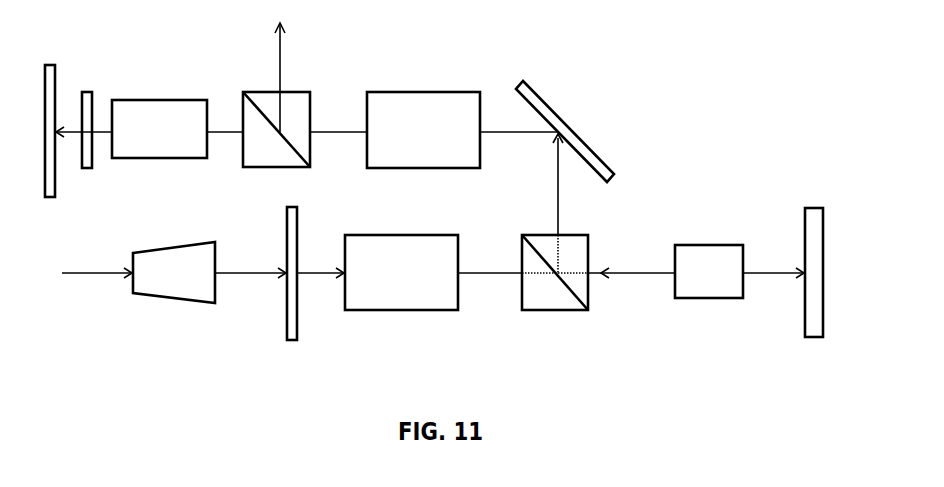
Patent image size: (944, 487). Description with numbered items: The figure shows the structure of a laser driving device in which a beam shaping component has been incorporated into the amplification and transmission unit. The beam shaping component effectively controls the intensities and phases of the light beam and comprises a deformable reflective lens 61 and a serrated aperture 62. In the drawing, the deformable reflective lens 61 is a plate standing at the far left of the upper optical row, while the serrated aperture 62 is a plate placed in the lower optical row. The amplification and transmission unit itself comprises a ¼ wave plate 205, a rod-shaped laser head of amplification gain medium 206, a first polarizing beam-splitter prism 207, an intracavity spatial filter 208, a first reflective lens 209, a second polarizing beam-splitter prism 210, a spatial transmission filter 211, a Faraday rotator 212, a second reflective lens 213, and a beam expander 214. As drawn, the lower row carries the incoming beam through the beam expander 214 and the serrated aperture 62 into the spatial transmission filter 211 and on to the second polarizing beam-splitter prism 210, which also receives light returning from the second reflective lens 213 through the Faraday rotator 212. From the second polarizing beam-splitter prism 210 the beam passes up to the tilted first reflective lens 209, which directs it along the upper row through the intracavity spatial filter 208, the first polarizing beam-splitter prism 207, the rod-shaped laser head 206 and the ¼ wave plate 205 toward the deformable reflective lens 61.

The deformable reflective lens 61 is at (50, 111).
The serrated aperture 62 is at (277, 296).
The ¼ wave plate 205 is at (84, 111).
The rod-shaped laser head of amplification gain medium 206 is at (159, 129).
The first polarizing beam-splitter prism 207 is at (285, 118).
The intracavity spatial filter 208 is at (423, 130).
The first reflective lens 209 is at (565, 131).
The second polarizing beam-splitter prism 210 is at (555, 291).
The spatial transmission filter 211 is at (401, 272).
The Faraday rotator 212 is at (709, 271).
The second reflective lens 213 is at (813, 296).
The beam expander 214 is at (174, 272).